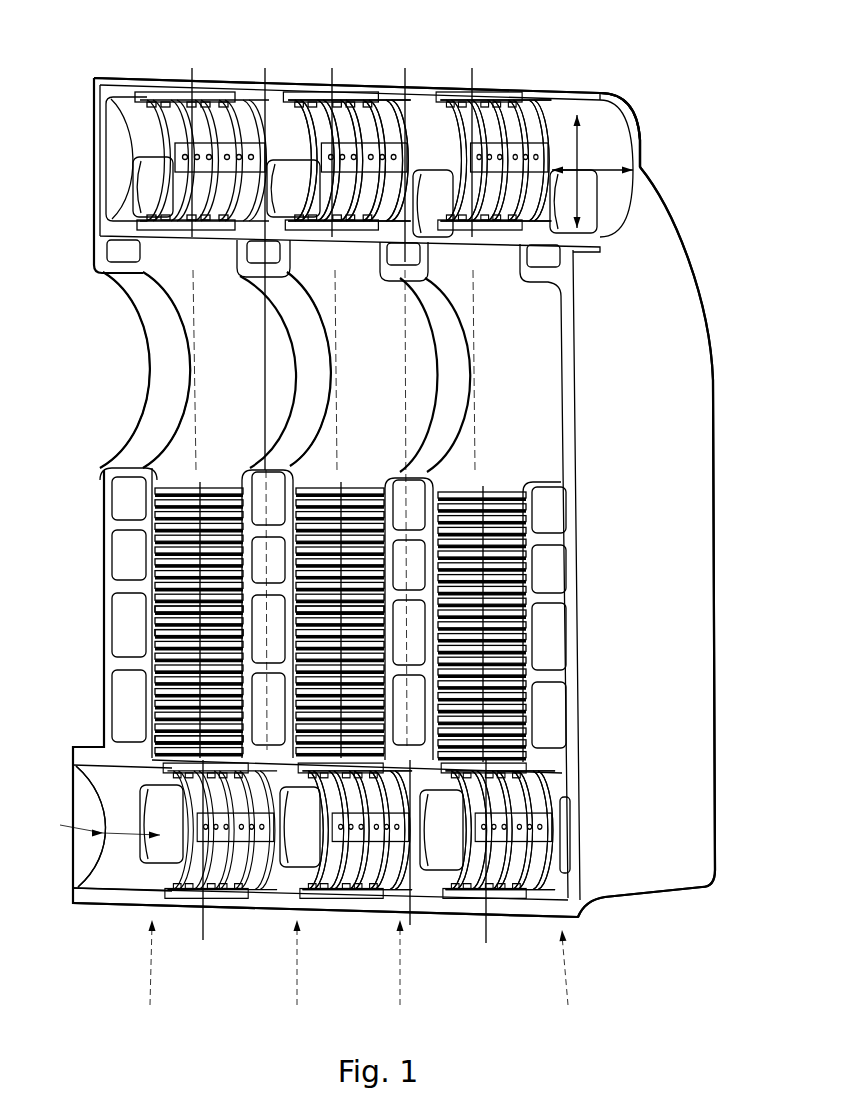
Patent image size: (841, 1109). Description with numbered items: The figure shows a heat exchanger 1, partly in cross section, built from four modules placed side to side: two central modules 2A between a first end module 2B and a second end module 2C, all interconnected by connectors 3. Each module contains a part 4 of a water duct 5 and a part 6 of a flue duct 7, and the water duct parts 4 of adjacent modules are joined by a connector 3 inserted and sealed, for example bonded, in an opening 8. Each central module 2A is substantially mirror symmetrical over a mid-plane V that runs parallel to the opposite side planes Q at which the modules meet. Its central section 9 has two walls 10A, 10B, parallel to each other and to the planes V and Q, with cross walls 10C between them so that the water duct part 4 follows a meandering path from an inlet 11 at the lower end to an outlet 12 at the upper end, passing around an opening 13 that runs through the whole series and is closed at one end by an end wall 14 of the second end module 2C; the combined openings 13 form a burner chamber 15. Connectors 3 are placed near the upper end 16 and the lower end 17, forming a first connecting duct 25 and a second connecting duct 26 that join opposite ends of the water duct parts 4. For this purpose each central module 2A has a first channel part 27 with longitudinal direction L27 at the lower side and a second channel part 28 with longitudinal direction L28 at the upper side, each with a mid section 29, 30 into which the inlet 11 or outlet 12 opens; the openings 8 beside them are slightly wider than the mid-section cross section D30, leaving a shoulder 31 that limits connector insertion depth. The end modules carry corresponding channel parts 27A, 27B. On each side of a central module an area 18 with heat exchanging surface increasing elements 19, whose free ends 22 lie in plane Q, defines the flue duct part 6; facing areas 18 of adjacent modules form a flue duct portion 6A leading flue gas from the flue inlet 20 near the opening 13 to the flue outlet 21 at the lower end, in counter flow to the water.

The heat exchanger 1 is at (730, 495).
The central module 2A is at (348, 976).
The first end module 2B is at (150, 976).
The second end module 2C is at (572, 981).
The connector 3 is at (175, 95).
The water duct part 4 is at (608, 655).
The water duct 5 is at (658, 157).
The flue duct part 6 is at (600, 633).
The flue duct portion 6A is at (622, 880).
The flue duct 7 is at (135, 377).
The opening 8 is at (500, 100).
The central section 9 is at (258, 668).
The wall 10A is at (175, 629).
The wall 10B is at (245, 613).
The cross wall 10C is at (292, 612).
The inlet 11 is at (320, 903).
The outlet 12 is at (582, 225).
The opening 13 is at (287, 340).
The end wall 14 is at (635, 383).
The burner chamber 15 is at (328, 394).
The upper end 16 is at (620, 88).
The lower end 17 is at (685, 908).
The area 18 is at (563, 455).
The heat exchanging surface increasing elements 19 is at (565, 543).
The flue inlet 20 is at (565, 483).
The flue outlet 21 is at (178, 735).
The free ends 22 is at (570, 575).
The first connecting duct 25 is at (96, 824).
The second connecting duct 26 is at (175, 157).
The first channel part 27 is at (288, 860).
The channel part 27A is at (163, 797).
The core end 27B is at (618, 185).
The second channel part 28 is at (417, 128).
The mid section 29 is at (445, 903).
The mid section 30 is at (270, 147).
The shoulder 31 is at (520, 103).
The cross section of mid section D30 is at (583, 135).
The longitudinal direction of first channel part L27 is at (168, 836).
The longitudinal direction of second channel part L28 is at (605, 170).
The side planes Q is at (192, 68).
The mid-plane V is at (265, 68).